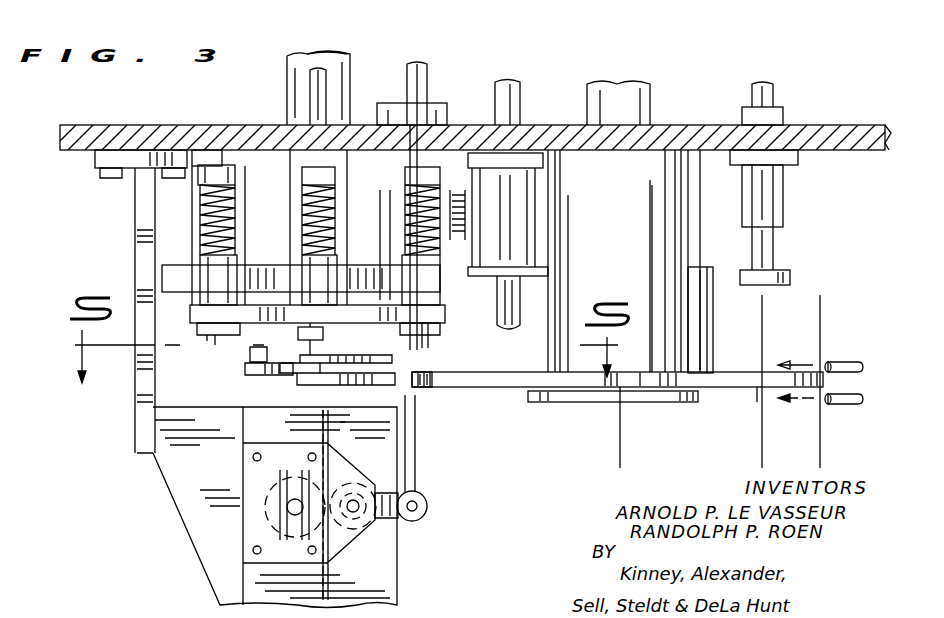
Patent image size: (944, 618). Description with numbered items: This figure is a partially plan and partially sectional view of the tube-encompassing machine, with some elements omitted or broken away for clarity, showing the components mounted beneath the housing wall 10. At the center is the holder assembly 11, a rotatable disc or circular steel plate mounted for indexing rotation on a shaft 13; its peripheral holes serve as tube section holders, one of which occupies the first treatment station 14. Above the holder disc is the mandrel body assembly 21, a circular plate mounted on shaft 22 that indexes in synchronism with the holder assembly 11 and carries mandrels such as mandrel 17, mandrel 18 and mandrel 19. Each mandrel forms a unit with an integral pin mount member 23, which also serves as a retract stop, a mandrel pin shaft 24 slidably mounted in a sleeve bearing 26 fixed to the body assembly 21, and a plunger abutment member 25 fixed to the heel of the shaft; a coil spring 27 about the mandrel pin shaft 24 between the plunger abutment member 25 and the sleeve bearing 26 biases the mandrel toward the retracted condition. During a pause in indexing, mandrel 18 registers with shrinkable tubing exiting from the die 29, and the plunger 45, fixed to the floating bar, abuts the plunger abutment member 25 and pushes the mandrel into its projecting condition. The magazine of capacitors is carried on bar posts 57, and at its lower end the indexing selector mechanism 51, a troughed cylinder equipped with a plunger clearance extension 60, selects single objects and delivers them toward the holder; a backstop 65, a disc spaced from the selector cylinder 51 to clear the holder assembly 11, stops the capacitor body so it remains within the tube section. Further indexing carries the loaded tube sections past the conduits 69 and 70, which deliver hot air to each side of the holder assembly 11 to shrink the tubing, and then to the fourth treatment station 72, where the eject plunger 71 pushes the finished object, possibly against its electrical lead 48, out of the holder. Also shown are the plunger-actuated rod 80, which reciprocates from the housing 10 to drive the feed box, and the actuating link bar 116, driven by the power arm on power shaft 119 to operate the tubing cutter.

The housing wall 10 is at (831, 149).
The holder assembly 11 is at (518, 388).
The shaft 13 is at (628, 218).
The first treatment station 14 is at (433, 388).
The mandrel 17 is at (437, 347).
The mandrel 18 is at (323, 340).
The mandrel 19 is at (215, 344).
The mandrel body assembly 21 is at (190, 315).
The shaft 22 is at (343, 205).
The pin mount member 23 is at (207, 336).
The mandrel pin shaft 24 is at (200, 200).
The plunger abutment member 25 is at (236, 174).
The sleeve bearing 26 is at (205, 300).
The coil spring 27 is at (234, 203).
The die 29 is at (320, 422).
The plunger 45 is at (318, 107).
The electrical lead 48 is at (762, 350).
The indexing selector mechanism 51 is at (710, 330).
The bar posts 57 is at (213, 150).
The plunger clearance extension 60 is at (700, 200).
The backstop 65 is at (640, 402).
The conduit 69 is at (835, 405).
The conduit 70 is at (843, 362).
The eject plunger 71 is at (780, 266).
The fourth treatment station 72 is at (757, 388).
The plunger-actuated rod 80 is at (416, 470).
The actuating link bar 116 is at (380, 407).
The power shaft 119 is at (515, 303).